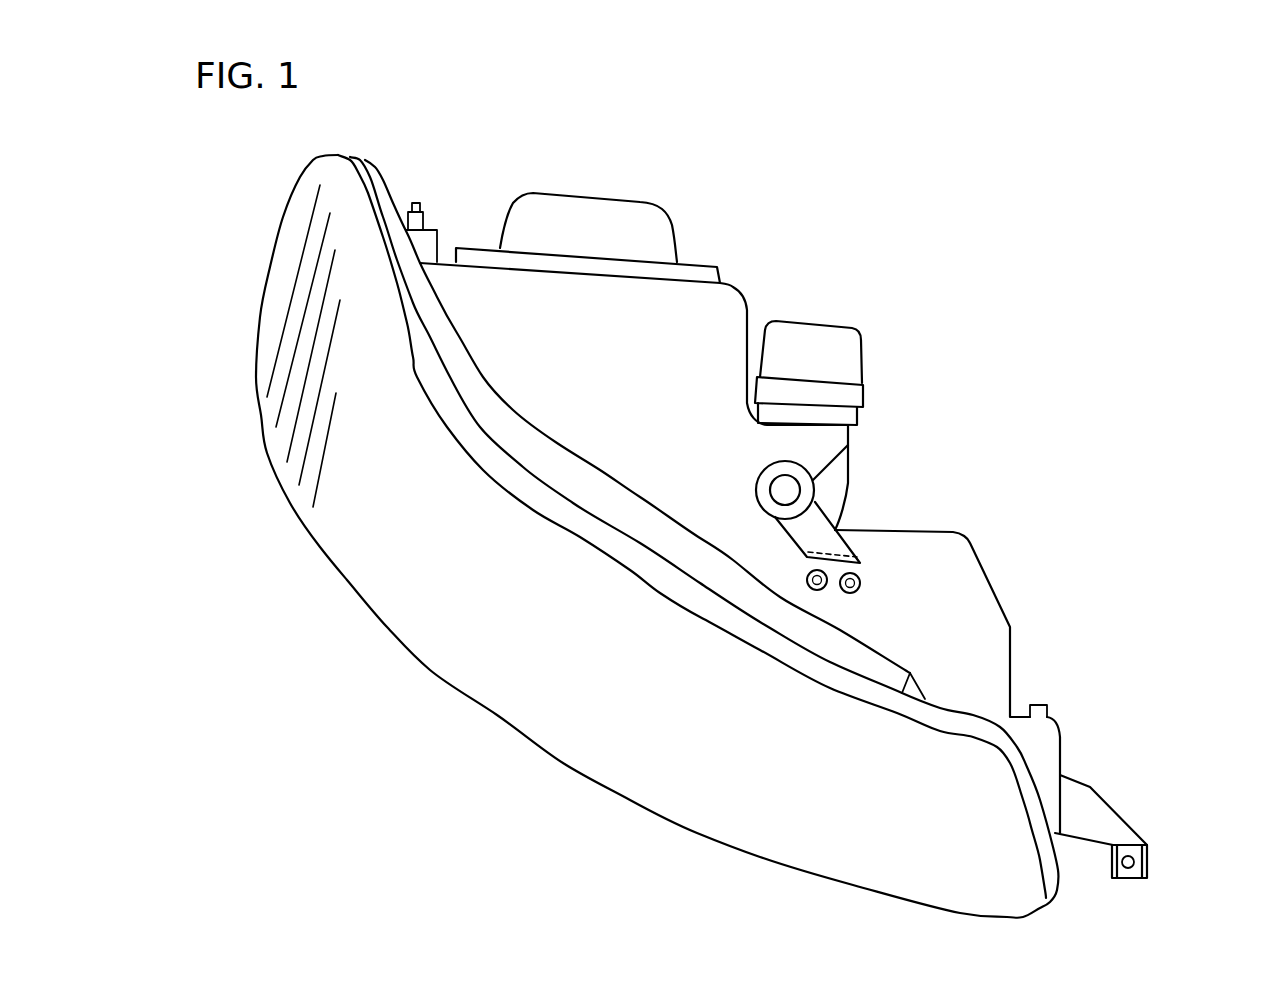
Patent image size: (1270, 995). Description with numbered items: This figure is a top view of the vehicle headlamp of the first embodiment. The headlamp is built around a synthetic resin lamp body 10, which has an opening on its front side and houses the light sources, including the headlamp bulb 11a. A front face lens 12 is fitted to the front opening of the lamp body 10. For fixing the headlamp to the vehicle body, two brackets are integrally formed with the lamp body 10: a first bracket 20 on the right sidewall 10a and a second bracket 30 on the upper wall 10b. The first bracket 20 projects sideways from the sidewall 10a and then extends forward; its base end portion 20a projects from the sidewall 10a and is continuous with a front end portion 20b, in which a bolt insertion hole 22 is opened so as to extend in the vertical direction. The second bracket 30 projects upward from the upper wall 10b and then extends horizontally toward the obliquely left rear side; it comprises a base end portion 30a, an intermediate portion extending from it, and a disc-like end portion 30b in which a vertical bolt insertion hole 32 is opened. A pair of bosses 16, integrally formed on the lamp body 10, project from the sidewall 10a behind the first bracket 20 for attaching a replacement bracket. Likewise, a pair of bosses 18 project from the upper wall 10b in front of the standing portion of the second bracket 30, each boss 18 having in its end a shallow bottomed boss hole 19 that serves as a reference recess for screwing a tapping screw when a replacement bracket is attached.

The lamp body 10 is at (700, 260).
The right sidewall 10a is at (1060, 777).
The upper wall 10b is at (930, 545).
The bulb 11a is at (830, 335).
The front face lens 12 is at (463, 672).
The bosses 16 is at (1040, 703).
The bosses 18 is at (815, 590).
The boss hole 19 is at (808, 573).
The first bracket 20 is at (1152, 810).
The base end portion 20a is at (1092, 783).
The front end portion 20b is at (1147, 853).
The bolt insertion hole 22 is at (1133, 862).
The second bracket 30 is at (823, 510).
The base end portion 30a is at (835, 530).
The disc-like end portion 30b is at (757, 480).
The bolt insertion hole 32 is at (797, 488).